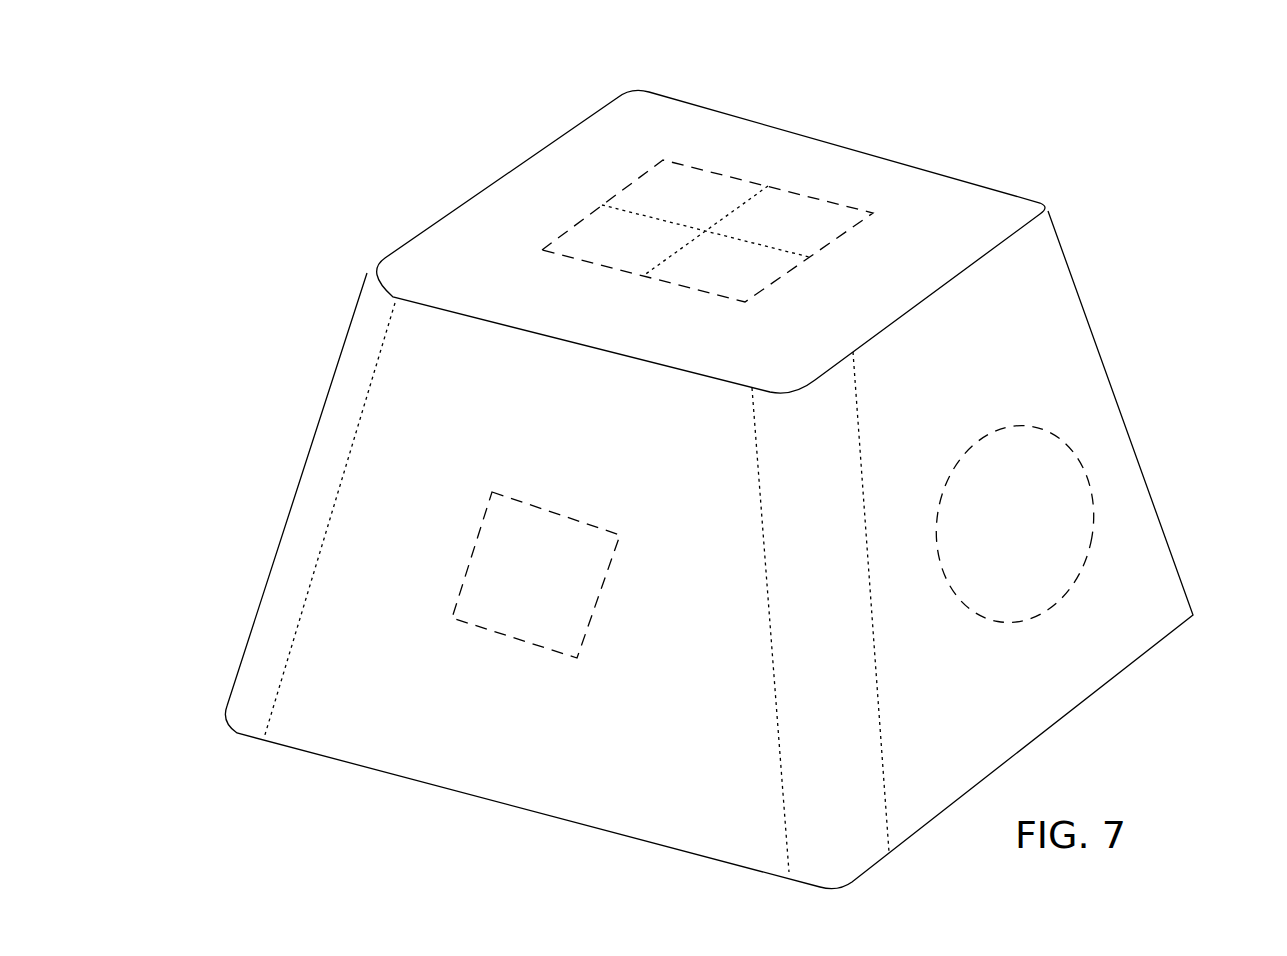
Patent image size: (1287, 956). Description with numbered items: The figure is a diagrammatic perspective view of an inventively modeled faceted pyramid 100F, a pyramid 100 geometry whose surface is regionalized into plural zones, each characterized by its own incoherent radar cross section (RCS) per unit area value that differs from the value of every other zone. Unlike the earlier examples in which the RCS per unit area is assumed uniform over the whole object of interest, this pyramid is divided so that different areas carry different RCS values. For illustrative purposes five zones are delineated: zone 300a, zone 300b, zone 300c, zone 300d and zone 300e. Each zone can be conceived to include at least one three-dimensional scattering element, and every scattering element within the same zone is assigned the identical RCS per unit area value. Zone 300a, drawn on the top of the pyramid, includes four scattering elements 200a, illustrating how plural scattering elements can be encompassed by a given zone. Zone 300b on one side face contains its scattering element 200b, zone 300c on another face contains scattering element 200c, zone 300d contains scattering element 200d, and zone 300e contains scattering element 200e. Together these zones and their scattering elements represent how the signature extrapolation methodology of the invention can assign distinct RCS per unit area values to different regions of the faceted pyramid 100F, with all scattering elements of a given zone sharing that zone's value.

The inventively modeled faceted pyramid 100F is at (738, 473).
The pyramid 100 is at (418, 178).
The three-dimensional scattering elements 200a is at (660, 195).
The zone 300a is at (711, 220).
The three-dimensional scattering element 200b is at (475, 570).
The zone 300b is at (493, 567).
The three-dimensional scattering element 200c is at (987, 436).
The zone 300c is at (1015, 475).
The three-dimensional scattering element 200d is at (880, 188).
The zone 300d is at (730, 225).
The three-dimensional scattering element 200e is at (468, 733).
The zone 300e is at (738, 489).